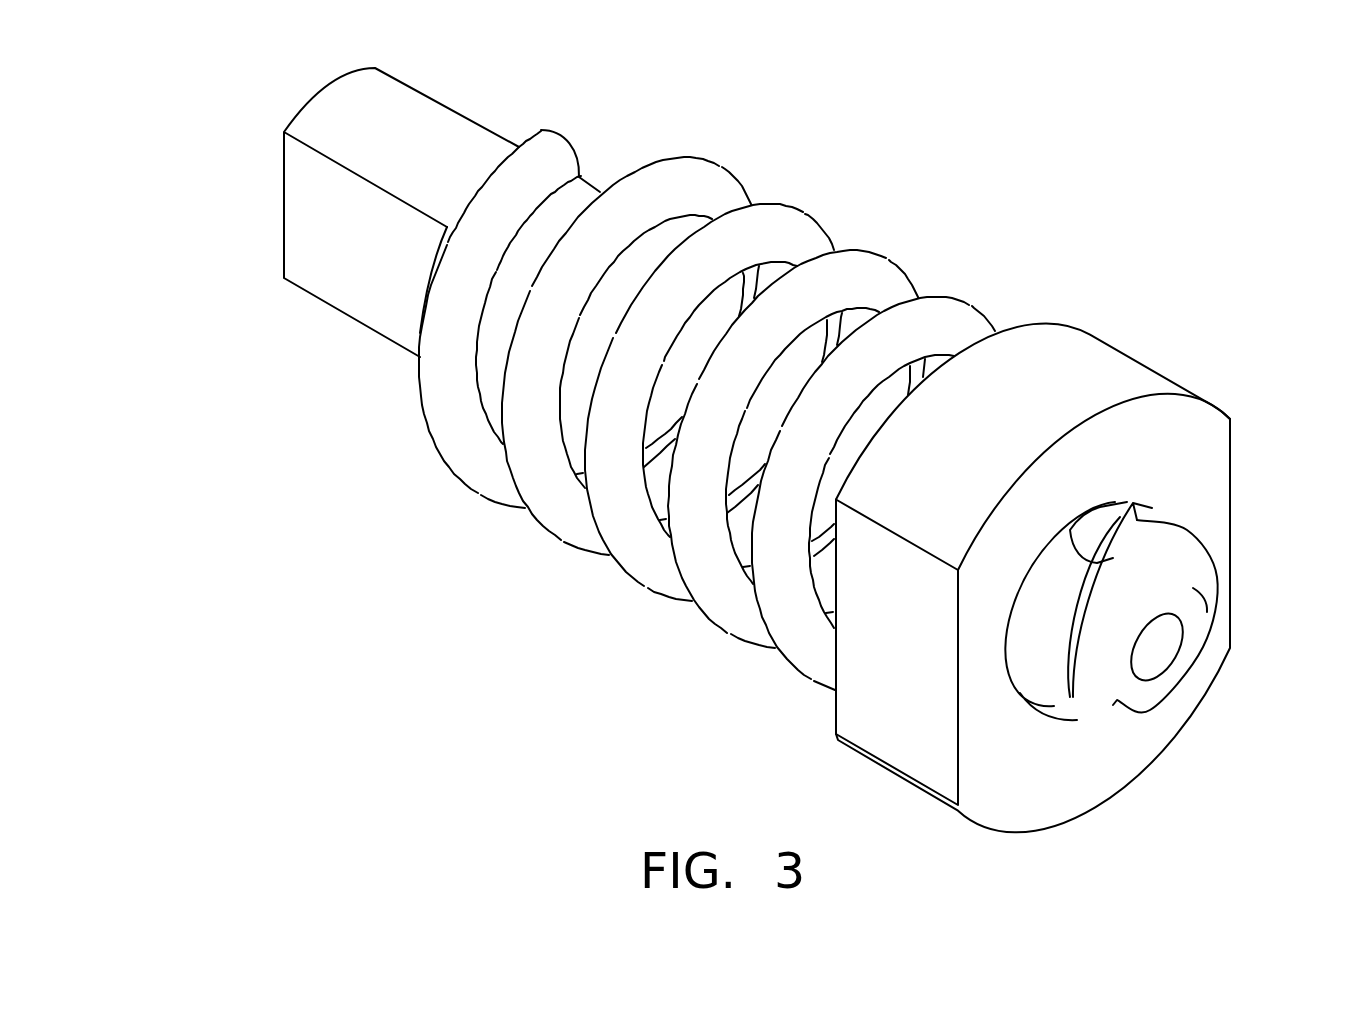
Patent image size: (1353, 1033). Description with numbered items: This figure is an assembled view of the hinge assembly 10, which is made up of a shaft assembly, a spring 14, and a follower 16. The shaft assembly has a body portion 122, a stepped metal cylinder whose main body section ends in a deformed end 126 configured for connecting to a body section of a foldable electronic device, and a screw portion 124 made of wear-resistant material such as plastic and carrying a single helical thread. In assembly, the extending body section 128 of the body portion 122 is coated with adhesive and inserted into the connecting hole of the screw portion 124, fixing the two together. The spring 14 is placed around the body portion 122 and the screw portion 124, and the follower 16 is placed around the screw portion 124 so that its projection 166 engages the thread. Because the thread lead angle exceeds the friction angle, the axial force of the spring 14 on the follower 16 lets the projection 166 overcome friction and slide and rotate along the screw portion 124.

The hinge assembly 10 is at (734, 450).
The spring 14 is at (698, 182).
The follower 16 is at (1080, 560).
The body portion 122 is at (585, 383).
The screw portion 124 is at (1162, 535).
The deformed end 126 is at (322, 215).
The extending body section 128 is at (1167, 635).
The projection 166 is at (1100, 528).